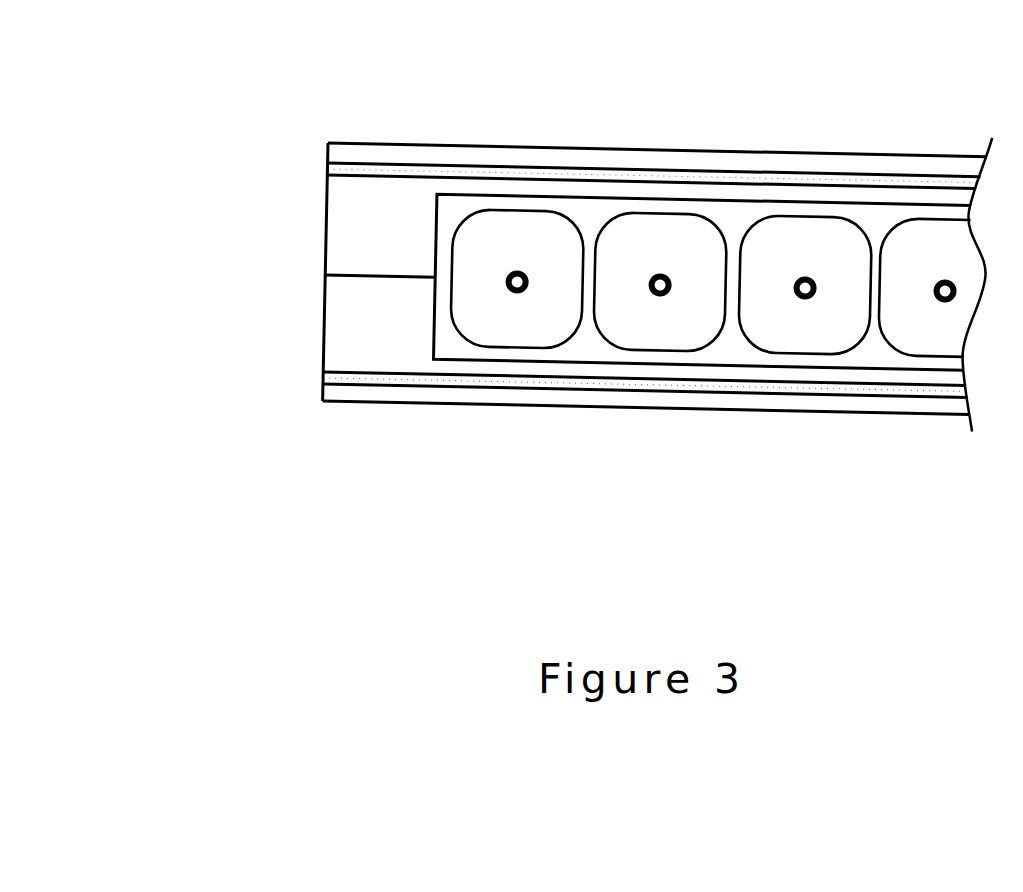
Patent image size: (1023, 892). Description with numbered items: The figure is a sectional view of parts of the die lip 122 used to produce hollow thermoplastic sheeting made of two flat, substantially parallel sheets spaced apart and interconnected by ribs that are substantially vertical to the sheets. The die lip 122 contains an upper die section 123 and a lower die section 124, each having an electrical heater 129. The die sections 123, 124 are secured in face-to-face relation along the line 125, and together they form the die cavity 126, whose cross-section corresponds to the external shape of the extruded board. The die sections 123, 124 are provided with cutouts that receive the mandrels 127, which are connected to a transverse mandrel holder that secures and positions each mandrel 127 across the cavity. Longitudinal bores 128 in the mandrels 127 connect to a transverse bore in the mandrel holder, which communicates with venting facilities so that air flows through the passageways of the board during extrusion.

The die lip 122 is at (477, 134).
The upper die section 123 is at (909, 154).
The lower die section 124 is at (867, 411).
The line 125 is at (313, 264).
The die cavity 126 is at (618, 203).
The mandrel 127 is at (807, 335).
The longitudinal bore 128 is at (650, 312).
The electrical heater 129 is at (296, 154).